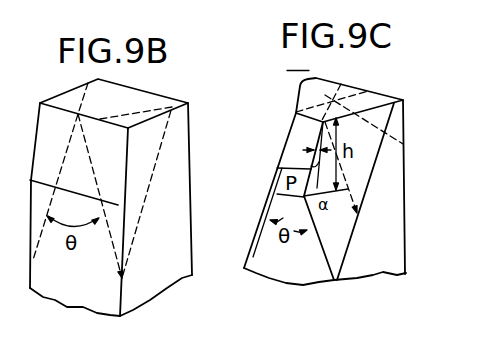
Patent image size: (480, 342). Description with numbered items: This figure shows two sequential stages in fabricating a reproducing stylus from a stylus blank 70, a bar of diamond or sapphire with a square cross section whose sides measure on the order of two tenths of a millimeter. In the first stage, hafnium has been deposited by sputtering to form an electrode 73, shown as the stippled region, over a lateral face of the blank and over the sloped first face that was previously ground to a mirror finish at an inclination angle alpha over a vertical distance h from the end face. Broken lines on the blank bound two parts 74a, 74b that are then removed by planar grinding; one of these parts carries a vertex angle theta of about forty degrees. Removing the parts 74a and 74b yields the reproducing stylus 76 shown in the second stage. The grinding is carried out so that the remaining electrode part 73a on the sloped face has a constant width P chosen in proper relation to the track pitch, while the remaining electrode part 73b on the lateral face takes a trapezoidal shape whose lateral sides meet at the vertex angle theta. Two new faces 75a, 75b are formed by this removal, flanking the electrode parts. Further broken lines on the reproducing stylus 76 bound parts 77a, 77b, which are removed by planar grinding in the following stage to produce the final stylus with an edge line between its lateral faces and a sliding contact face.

In FIG. 9B, the stylus blank 70 is at (180, 193).
In FIG. 9B, the electrode 73 is at (43, 248).
In FIG. 9B, the part to be removed 74a is at (176, 141).
In FIG. 9B, the part to be removed 74b is at (38, 118).
In FIG. 9C, the reproducing stylus 76 is at (325, 168).
In FIG. 9C, the remaining electrode part 73a is at (295, 134).
In FIG. 9C, the remaining electrode part 73b is at (255, 256).
In FIG. 9C, the new face 75a is at (347, 222).
In FIG. 9C, the new face 75b is at (270, 192).
In FIG. 9C, the part to be removed 77a is at (357, 213).
In FIG. 9C, the part to be removed 77b is at (298, 108).